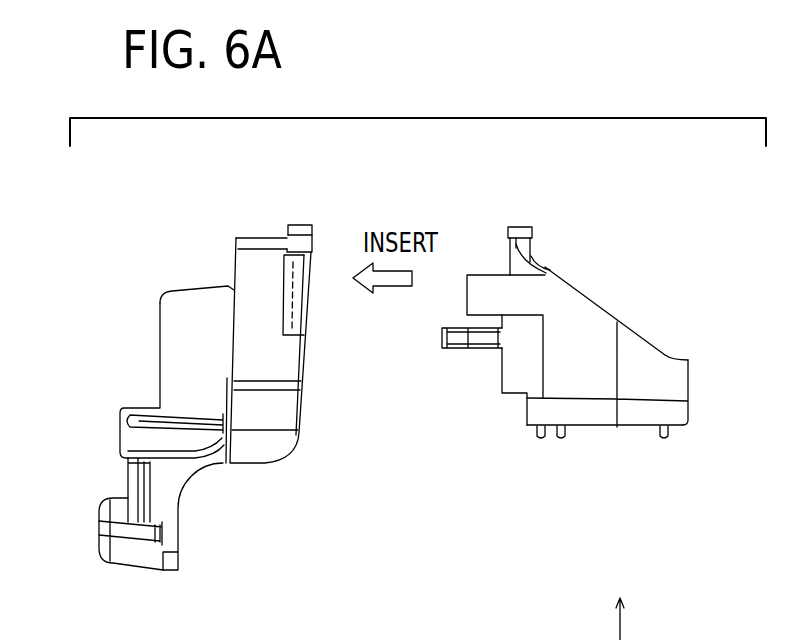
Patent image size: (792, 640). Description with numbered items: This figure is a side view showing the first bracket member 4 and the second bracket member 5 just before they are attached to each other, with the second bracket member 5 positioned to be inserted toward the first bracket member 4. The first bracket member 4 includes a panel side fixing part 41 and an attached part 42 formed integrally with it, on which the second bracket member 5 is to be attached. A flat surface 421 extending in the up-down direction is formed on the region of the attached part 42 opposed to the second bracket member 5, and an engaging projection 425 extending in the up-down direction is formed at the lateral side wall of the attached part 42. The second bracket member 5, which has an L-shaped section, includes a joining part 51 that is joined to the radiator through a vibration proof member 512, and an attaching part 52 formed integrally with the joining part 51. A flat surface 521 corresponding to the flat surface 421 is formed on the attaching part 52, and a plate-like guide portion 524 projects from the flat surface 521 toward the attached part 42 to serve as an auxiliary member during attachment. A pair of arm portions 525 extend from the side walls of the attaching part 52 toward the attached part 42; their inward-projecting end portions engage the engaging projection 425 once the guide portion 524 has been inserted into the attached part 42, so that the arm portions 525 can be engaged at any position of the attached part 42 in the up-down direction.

The first bracket member 4 is at (131, 259).
The attached part 42 is at (224, 258).
The engaging projection 425 is at (287, 272).
The flat surface 421 is at (313, 240).
The panel side fixing part 41 is at (123, 396).
The second bracket member 5 is at (628, 270).
The flat surface 521 is at (508, 240).
The attaching part 52 is at (560, 261).
The guide portion 524 is at (443, 333).
The arm portion 525 is at (480, 303).
The joining part 51 is at (698, 408).
The vibration proof member 512 is at (633, 430).